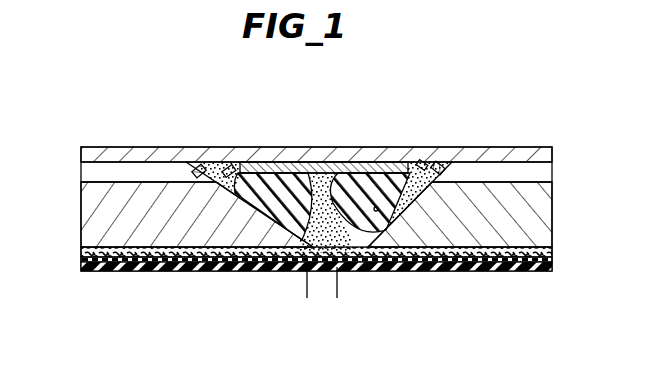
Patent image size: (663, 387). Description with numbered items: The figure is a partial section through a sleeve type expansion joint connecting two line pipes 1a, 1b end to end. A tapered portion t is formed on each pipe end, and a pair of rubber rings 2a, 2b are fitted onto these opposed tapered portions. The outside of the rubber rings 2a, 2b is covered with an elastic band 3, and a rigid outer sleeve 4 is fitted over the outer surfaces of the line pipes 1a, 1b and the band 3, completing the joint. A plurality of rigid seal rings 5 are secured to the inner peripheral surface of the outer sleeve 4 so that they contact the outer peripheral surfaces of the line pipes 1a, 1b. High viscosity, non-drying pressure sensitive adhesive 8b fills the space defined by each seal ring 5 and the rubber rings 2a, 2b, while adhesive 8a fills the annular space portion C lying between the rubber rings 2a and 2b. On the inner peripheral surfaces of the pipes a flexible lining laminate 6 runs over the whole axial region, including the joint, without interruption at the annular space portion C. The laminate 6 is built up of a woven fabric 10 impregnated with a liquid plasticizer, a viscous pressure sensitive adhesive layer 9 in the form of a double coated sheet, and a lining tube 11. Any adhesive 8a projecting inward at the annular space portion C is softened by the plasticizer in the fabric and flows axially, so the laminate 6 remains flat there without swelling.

The line pipe 1a is at (128, 188).
The line pipe 1b is at (505, 222).
The rubber ring 2a is at (280, 180).
The rubber ring 2b is at (369, 180).
The elastic band 3 is at (318, 168).
The rigid outer sleeve 4 is at (474, 152).
The rigid seal ring 5 is at (198, 166).
The flexible lining laminate 6 is at (204, 274).
The non-drying pressure sensitive adhesive 8a is at (278, 262).
The non-drying pressure sensitive adhesive 8b is at (224, 166).
The viscous pressure sensitive adhesive layer 9 is at (127, 262).
The woven fabric 10 is at (108, 270).
The lining tube 11 is at (440, 263).
The annular space portion C is at (337, 295).
The tapered portion t is at (376, 211).